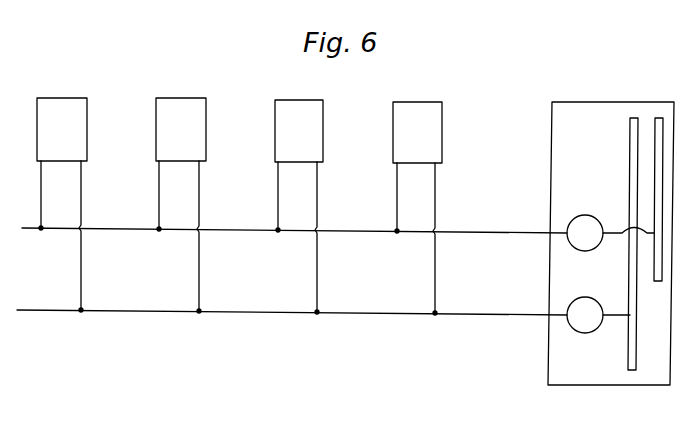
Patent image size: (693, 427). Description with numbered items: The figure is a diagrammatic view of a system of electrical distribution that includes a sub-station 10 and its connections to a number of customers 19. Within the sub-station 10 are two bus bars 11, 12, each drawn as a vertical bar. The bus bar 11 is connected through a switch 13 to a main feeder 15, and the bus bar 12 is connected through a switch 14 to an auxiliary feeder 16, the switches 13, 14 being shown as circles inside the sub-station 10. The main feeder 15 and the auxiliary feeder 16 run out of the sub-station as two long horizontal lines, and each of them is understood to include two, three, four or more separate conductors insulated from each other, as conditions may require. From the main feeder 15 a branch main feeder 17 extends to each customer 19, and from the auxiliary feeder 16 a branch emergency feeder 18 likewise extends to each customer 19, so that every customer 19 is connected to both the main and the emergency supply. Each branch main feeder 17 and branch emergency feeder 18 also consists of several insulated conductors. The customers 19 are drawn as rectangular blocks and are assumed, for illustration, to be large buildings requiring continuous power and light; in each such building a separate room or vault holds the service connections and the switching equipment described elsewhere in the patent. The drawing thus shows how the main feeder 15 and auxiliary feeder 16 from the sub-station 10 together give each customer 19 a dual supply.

The sub-station 10 is at (582, 110).
The bus bar 11 is at (634, 118).
The bus bar 12 is at (660, 118).
The switch 13 is at (586, 215).
The switch 14 is at (602, 283).
The main feeder 15 is at (497, 233).
The auxiliary feeder 16 is at (465, 316).
The branch main feeder 17 is at (41, 195).
The branch emergency feeder 18 is at (83, 195).
The customer 19 is at (239, 130).